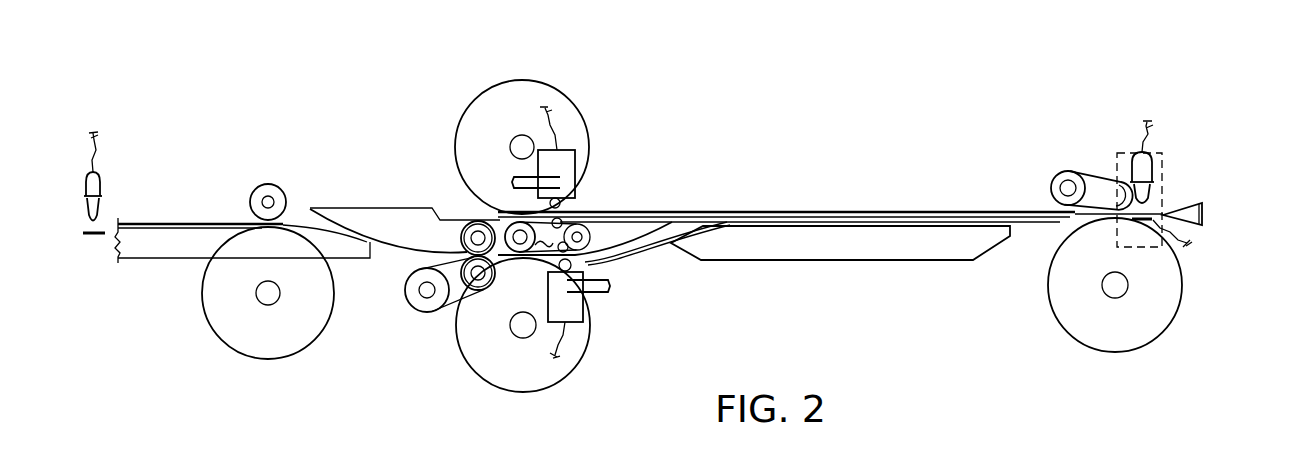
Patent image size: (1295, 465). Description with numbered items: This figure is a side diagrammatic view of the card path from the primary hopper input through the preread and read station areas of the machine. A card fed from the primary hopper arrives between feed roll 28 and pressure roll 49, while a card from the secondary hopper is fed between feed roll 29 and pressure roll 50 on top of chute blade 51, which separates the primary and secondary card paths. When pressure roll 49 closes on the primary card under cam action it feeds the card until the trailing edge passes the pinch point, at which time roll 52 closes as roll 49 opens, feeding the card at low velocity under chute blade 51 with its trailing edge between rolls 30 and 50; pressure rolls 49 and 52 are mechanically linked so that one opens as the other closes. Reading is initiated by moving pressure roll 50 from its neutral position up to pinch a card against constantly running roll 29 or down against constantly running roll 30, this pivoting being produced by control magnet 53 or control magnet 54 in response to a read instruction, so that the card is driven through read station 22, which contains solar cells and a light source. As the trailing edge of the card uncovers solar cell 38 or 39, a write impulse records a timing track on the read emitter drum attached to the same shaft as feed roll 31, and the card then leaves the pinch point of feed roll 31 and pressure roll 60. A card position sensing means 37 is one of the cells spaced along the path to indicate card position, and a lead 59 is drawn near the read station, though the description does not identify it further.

The card sensing station 22 is at (1163, 155).
The feed roll 28 is at (203, 290).
The feed roll 29 is at (583, 115).
The feed roll 30 is at (583, 358).
The feed roll 31 is at (1077, 340).
The card position sensing means 37 is at (88, 237).
The solar cell 38 is at (563, 222).
The solar cell 39 is at (590, 257).
The pressure roll 49 is at (250, 196).
The pressure roll 50 is at (500, 221).
The chute blade 51 is at (1205, 213).
The roll 52 is at (467, 291).
The control magnet 53 is at (577, 178).
The control magnet 54 is at (585, 292).
The lead wire 59 is at (1187, 238).
The pressure roll 60 is at (1100, 180).